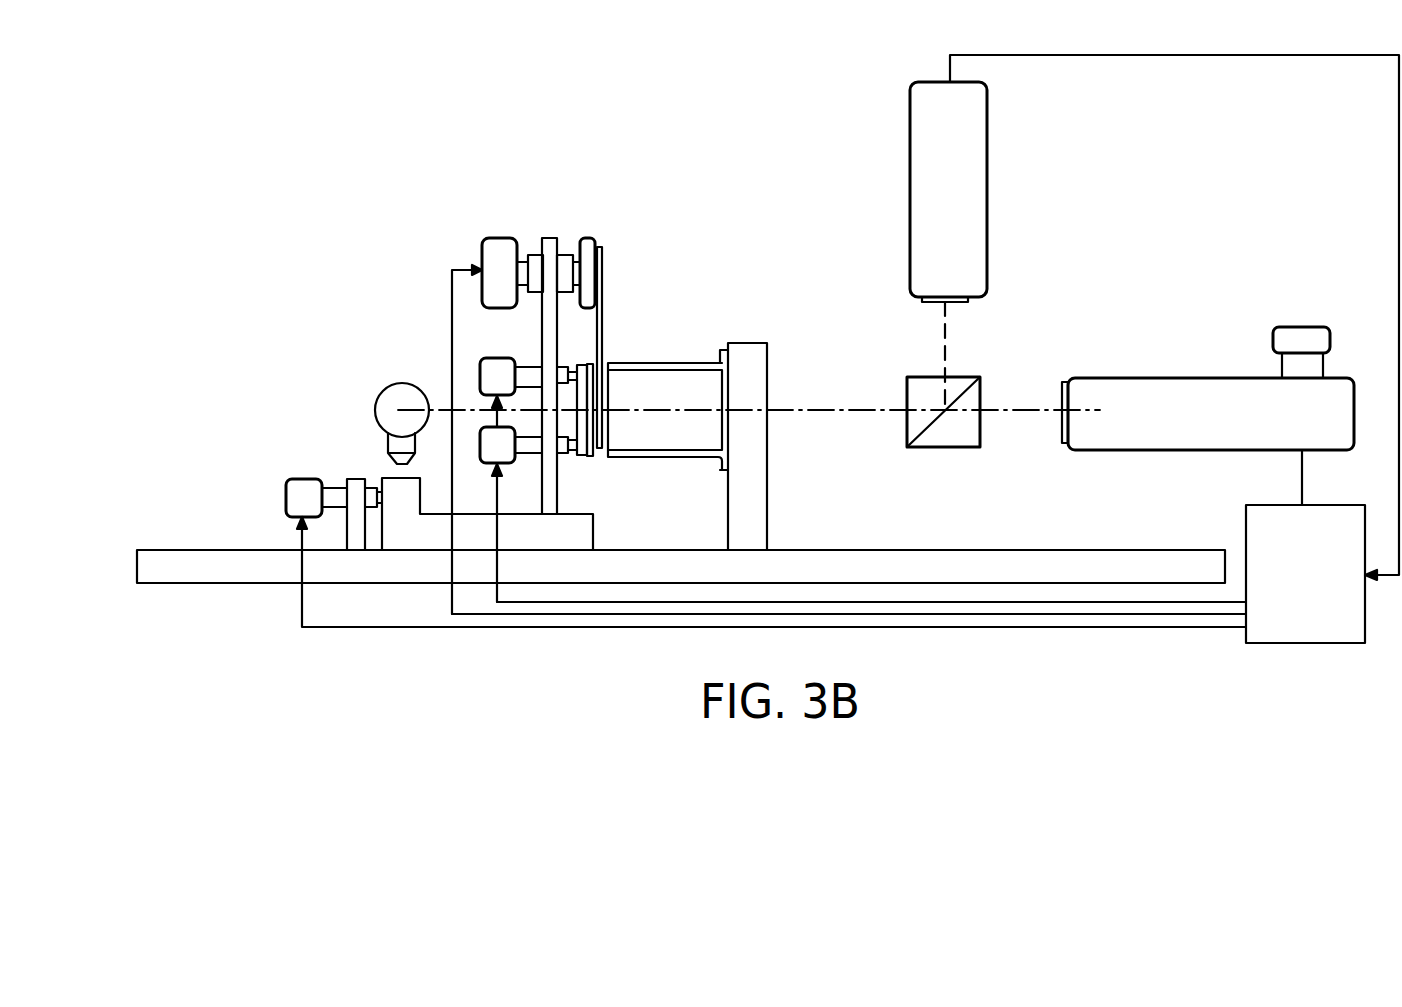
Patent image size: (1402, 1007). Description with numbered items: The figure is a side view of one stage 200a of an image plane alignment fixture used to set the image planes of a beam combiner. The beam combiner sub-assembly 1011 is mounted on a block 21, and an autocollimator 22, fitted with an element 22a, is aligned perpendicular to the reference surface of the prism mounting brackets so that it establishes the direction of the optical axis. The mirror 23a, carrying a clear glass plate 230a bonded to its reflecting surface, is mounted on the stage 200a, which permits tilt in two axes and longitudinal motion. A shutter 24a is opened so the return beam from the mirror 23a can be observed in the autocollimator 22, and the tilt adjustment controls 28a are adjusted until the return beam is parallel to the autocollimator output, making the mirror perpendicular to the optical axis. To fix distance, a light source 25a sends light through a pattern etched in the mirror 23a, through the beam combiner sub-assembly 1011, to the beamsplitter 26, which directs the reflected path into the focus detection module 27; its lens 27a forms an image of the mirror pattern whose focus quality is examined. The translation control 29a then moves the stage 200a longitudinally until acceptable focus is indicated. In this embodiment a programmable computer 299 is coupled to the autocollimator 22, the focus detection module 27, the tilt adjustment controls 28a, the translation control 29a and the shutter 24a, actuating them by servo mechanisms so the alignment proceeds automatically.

The stage 200a is at (496, 198).
The tilt adjustment controls 28a is at (480, 438).
The light source 25a is at (375, 400).
The translation control 29a is at (286, 488).
The shutter 24a is at (605, 293).
The clear glass plate 230a is at (582, 455).
The mirror 23a is at (583, 456).
The beam combiner sub-assembly 1011 is at (687, 347).
The block 21 is at (767, 508).
The focus detection module 27 is at (987, 143).
The lens 27a is at (932, 302).
The beamsplitter 26 is at (982, 383).
The autocollimator 22 is at (1188, 378).
The autocollimator eyepiece 22a is at (1302, 327).
The programmable computer 299 is at (1337, 593).